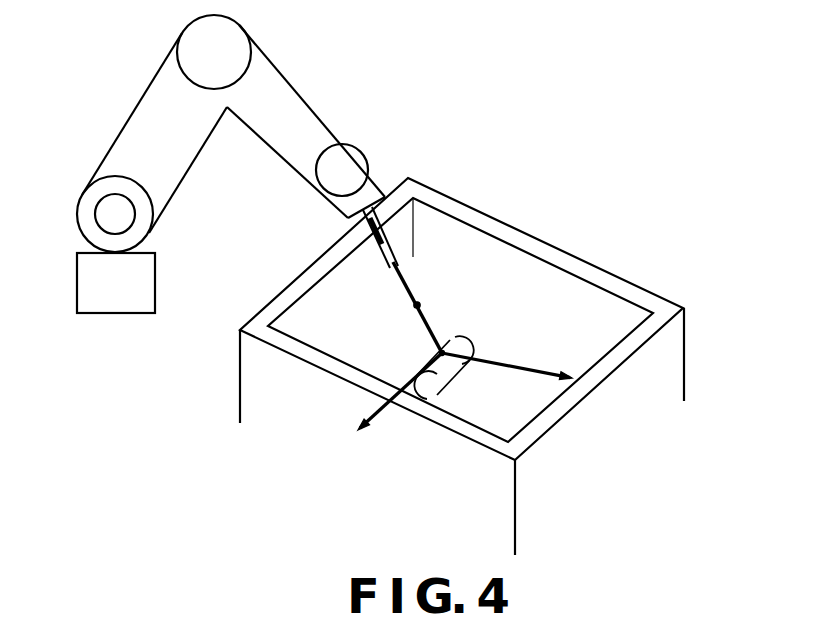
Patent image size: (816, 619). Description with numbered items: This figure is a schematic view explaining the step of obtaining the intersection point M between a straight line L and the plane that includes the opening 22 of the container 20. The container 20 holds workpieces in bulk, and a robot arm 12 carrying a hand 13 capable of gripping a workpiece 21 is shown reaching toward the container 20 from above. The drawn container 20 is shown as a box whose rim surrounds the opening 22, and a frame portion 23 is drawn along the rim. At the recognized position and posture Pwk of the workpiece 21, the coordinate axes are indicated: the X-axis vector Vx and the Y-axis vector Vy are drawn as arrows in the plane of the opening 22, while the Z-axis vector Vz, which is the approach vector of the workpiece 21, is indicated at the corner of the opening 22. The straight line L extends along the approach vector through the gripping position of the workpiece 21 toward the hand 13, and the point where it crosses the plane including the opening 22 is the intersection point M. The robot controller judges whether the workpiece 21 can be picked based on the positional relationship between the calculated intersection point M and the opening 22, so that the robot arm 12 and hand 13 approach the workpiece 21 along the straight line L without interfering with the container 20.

The robot arm 12 is at (147, 130).
The hand 13 is at (368, 229).
The container 20 is at (655, 375).
The workpiece 21 is at (452, 372).
The opening 22 is at (528, 278).
The frame 23 is at (297, 300).
The straight line L is at (404, 284).
The intersection point M is at (420, 304).
The position and posture of the workpiece Pwk is at (444, 350).
The X-axis vector Vx is at (357, 430).
The Y-axis vector Vy is at (580, 373).
The Z-axis vector Vz is at (414, 197).